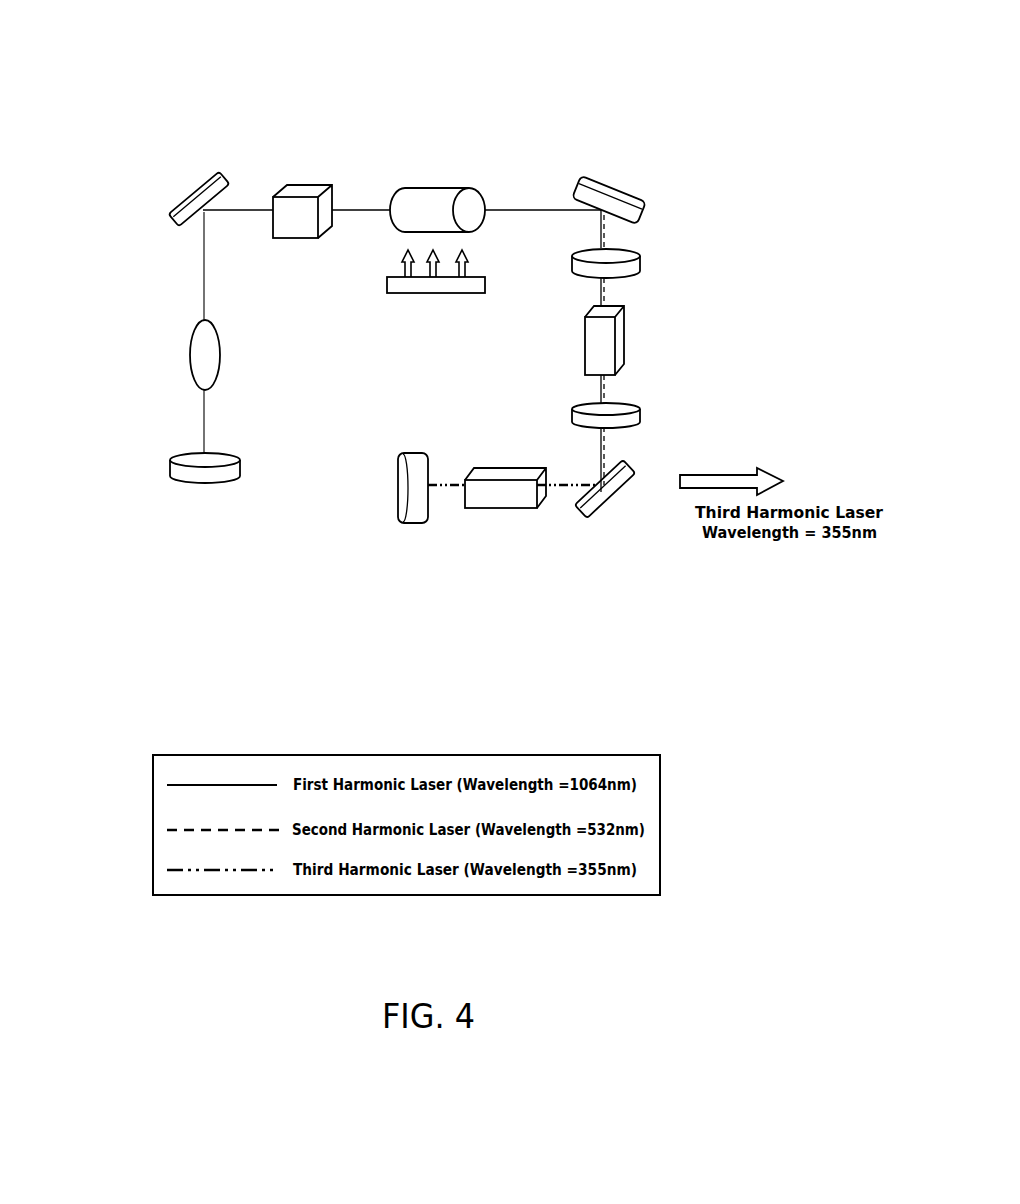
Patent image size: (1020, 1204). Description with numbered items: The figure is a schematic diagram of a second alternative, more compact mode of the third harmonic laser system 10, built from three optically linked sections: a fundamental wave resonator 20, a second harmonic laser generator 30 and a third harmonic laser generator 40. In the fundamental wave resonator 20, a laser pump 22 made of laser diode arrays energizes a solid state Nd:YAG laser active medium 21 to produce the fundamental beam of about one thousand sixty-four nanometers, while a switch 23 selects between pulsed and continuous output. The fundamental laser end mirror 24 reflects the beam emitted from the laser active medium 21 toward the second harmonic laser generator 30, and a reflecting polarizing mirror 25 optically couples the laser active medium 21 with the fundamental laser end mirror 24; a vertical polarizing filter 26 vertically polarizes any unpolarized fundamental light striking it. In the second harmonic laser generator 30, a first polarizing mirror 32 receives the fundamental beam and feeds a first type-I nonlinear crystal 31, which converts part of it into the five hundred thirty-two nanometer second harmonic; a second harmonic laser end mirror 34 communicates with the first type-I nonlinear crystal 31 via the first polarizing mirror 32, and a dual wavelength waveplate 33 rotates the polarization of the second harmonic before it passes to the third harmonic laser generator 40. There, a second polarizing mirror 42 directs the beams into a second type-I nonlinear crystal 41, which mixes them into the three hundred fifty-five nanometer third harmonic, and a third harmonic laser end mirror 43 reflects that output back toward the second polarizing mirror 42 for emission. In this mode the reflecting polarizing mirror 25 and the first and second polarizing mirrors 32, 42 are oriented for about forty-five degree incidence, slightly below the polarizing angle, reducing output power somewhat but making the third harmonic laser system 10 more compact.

The third harmonic laser system 10 is at (140, 418).
The fundamental wave resonator 20 is at (468, 62).
The laser active medium 21 is at (428, 202).
The laser pump 22 is at (440, 285).
The switch 23 is at (301, 212).
The fundamental laser end mirror 24 is at (205, 468).
The reflecting polarizing mirror 25 is at (205, 183).
The vertical polarizing filter 26 is at (203, 333).
The second harmonic laser generator 30 is at (812, 322).
The first type-I nonlinear crystal 31 is at (628, 335).
The first polarizing mirror 32 is at (613, 197).
The dual wavelength waveplate 33 is at (638, 405).
The second harmonic laser end mirror 34 is at (613, 262).
The third harmonic laser generator 40 is at (413, 637).
The second type-I nonlinear crystal 41 is at (510, 495).
The second polarizing mirror 42 is at (598, 502).
The third harmonic laser end mirror 43 is at (405, 488).